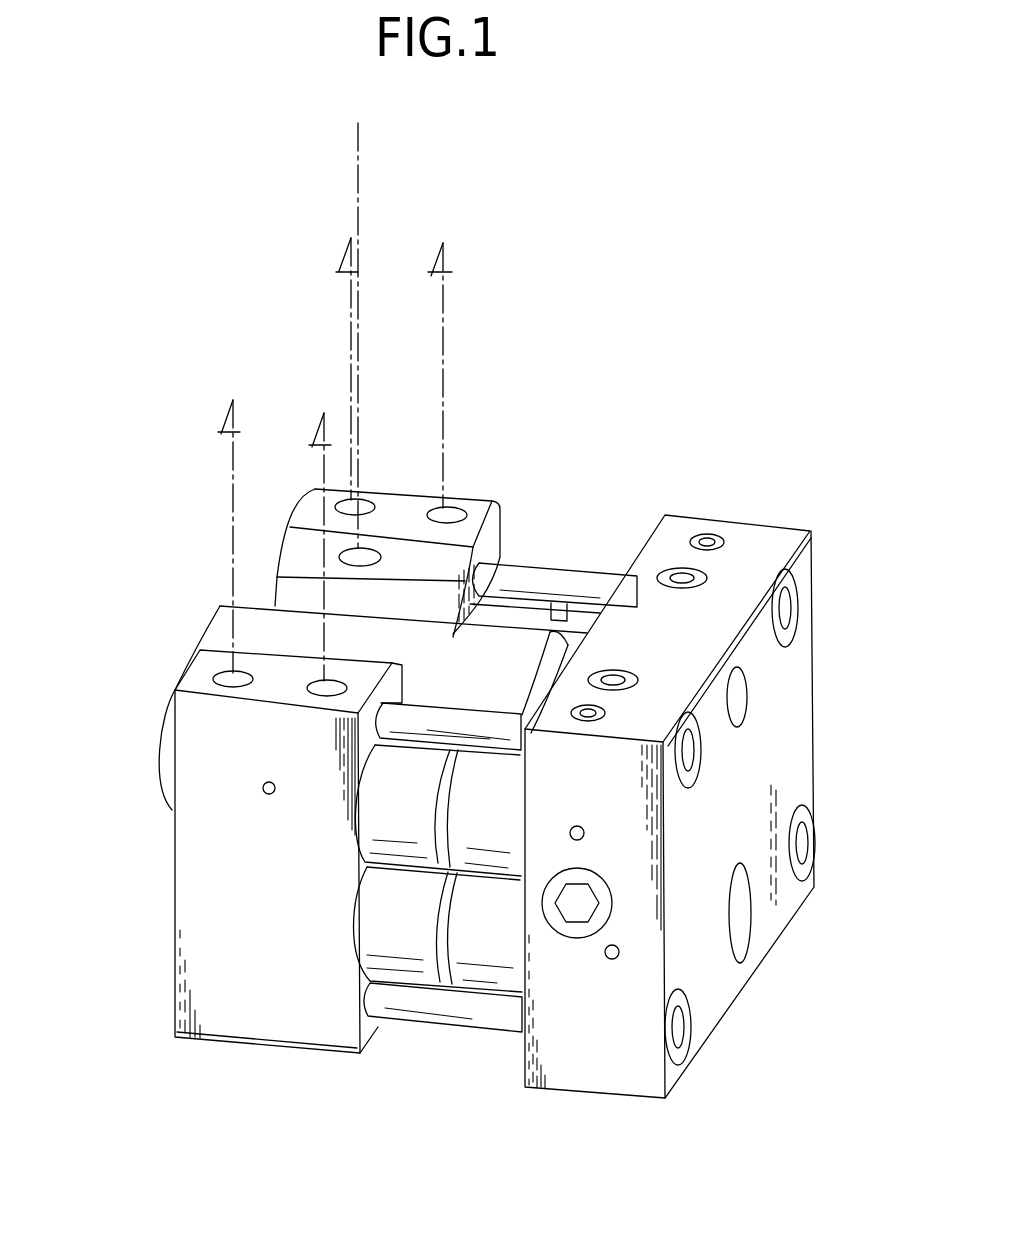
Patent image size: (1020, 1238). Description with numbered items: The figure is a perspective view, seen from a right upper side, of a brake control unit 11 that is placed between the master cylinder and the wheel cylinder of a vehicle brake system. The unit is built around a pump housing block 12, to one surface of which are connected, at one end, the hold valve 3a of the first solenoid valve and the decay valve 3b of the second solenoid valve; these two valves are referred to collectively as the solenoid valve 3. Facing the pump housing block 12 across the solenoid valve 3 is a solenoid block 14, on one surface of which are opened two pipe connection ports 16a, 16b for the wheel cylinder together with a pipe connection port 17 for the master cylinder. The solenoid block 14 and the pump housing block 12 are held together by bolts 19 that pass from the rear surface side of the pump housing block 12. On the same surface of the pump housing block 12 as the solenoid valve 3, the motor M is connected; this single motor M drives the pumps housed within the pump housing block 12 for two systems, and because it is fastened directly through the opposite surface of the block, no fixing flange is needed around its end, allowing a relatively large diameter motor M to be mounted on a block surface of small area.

The brake control unit 11 is at (736, 490).
The pump housing block 12 is at (795, 757).
The solenoid block 14 is at (195, 889).
The pipe connection port 16a is at (225, 677).
The pipe connection port 16b is at (315, 688).
The pipe connection port 17 is at (368, 558).
The bolts 19 is at (592, 582).
The solenoid valve 3 is at (330, 1135).
The hold valve 3a is at (373, 825).
The decay valve 3b is at (373, 942).
The motor M is at (220, 623).